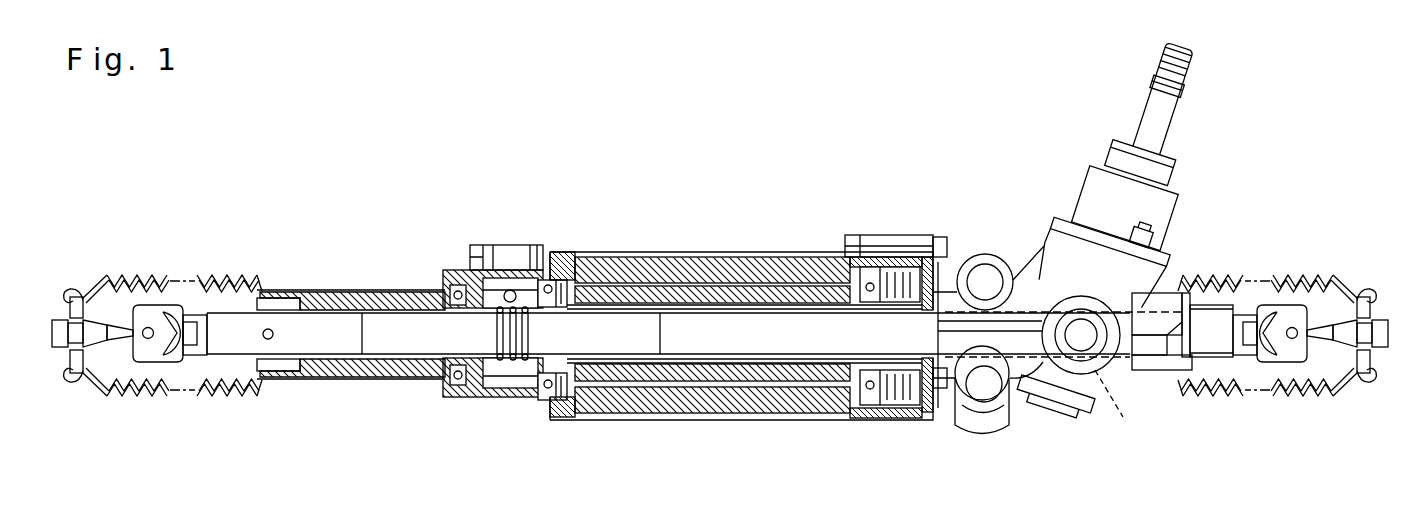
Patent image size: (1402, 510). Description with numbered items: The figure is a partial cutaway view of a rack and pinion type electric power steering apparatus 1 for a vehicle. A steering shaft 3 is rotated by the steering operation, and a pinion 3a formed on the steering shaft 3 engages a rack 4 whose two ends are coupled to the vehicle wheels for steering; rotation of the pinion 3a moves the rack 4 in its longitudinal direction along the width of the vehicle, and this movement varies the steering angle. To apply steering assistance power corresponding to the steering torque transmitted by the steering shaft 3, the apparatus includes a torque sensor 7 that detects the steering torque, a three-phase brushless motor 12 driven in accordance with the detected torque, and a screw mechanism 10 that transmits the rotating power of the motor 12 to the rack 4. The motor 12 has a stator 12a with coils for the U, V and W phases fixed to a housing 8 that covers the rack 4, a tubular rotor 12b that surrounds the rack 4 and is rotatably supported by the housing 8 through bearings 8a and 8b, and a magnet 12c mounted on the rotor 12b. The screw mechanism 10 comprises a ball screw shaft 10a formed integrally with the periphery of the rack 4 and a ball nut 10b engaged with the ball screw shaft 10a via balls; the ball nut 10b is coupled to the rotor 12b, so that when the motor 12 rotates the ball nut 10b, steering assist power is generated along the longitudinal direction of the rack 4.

The electric power steering apparatus 1 is at (1177, 184).
The steering shaft 3 is at (1165, 110).
The pinion 3a is at (1132, 406).
The rack 4 is at (787, 338).
The torque sensor 7 is at (1095, 195).
The housing 8 is at (748, 293).
The bearing 8a is at (552, 262).
The bearing 8b is at (873, 270).
The screw mechanism 10 is at (496, 352).
The ball screw shaft 10a is at (497, 327).
The ball nut 10b is at (530, 362).
The three-phase brushless motor 12 is at (738, 252).
The stator 12a is at (611, 270).
The tubular rotor 12b is at (683, 280).
The magnet 12c is at (790, 270).